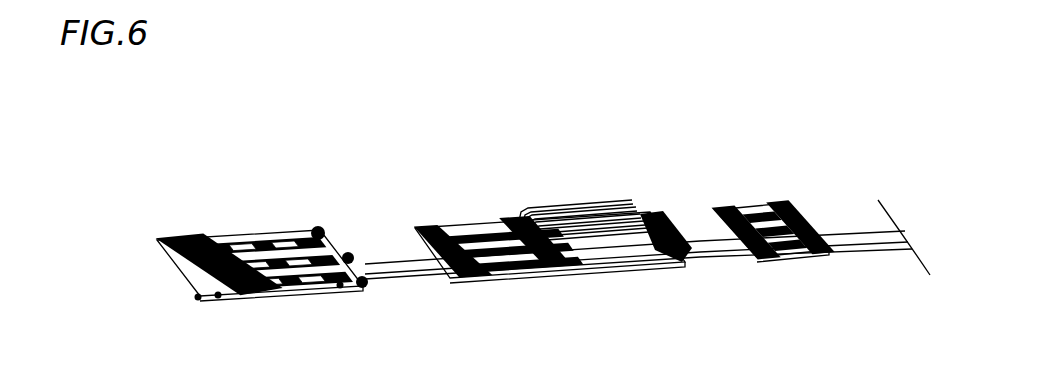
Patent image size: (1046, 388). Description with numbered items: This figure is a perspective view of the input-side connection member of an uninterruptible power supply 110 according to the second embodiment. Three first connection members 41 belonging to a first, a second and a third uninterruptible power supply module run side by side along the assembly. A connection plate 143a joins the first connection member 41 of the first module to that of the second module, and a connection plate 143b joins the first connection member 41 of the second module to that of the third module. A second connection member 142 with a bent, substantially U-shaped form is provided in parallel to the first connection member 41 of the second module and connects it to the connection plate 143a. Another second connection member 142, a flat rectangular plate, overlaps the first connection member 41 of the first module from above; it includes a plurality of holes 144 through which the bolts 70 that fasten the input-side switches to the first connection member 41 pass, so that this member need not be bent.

The uninterruptible power supply 110 is at (180, 148).
The bolt 70 is at (165, 235).
The second connection member 142 is at (322, 252).
The hole 144 is at (272, 288).
The first connection member 41 is at (377, 286).
The connection plate 143a is at (503, 273).
The connection plate 143b is at (785, 250).